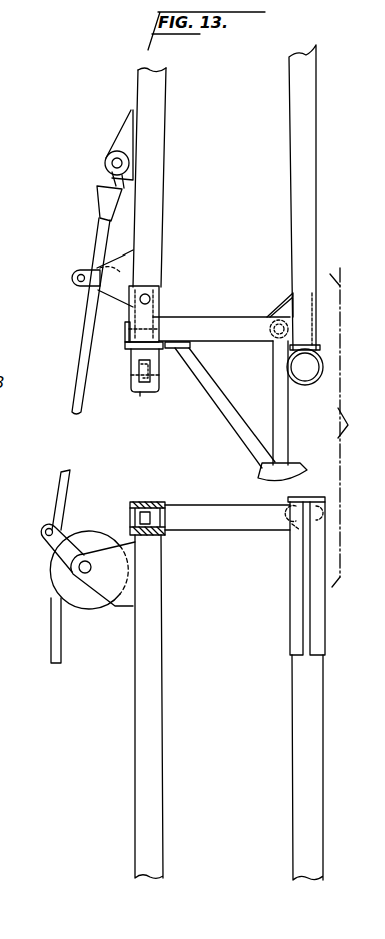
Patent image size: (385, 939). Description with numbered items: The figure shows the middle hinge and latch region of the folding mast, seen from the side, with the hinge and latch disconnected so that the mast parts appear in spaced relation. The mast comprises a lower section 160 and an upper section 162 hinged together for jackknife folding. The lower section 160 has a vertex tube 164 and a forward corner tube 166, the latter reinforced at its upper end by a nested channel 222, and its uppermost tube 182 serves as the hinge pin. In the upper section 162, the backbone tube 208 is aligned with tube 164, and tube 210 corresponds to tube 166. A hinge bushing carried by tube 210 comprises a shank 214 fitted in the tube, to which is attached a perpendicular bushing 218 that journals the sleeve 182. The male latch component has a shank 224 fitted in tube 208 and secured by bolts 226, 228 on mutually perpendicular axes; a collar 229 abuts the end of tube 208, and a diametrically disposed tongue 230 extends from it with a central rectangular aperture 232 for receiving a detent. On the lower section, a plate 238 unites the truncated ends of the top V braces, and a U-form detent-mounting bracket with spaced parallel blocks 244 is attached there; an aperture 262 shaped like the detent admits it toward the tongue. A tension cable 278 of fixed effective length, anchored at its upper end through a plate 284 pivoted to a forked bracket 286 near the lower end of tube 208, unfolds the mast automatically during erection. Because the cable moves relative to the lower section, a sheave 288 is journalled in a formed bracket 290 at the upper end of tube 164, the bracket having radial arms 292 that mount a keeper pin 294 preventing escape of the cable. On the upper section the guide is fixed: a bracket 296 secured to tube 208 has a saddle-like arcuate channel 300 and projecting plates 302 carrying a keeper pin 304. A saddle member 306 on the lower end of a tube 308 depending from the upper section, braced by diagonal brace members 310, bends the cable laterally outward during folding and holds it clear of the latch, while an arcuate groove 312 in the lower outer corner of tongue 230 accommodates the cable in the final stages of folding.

The lower section 160 is at (122, 718).
The upper section 162 is at (124, 91).
The vertex tube 164 is at (152, 690).
The corner tube 166 is at (297, 712).
The uppermost tube 182 is at (289, 537).
The backbone tube 208 is at (157, 134).
The tube 210 is at (298, 137).
The shank 214 is at (340, 268).
The bushing 218 is at (297, 383).
The channel 222 is at (297, 613).
The shank 224 is at (162, 298).
The bolt 226 is at (147, 294).
The bolt 228 is at (127, 330).
The collar 229 is at (128, 344).
The tongue 230 is at (140, 353).
The aperture 232 is at (145, 372).
The plate 238 is at (167, 511).
The blocks 244 is at (138, 503).
The aperture 262 is at (152, 519).
The tension cable 278 is at (63, 473).
The plate 284 is at (112, 178).
The forked bracket 286 is at (122, 123).
The sheave 288 is at (62, 585).
The formed bracket 290 is at (118, 596).
The radial arms 292 is at (66, 540).
The pin 294 is at (47, 527).
The bracket 296 is at (123, 255).
The arcuate channel 300 is at (115, 281).
The projecting plates 302 is at (95, 268).
The keeper pin 304 is at (77, 276).
The saddle member 306 is at (302, 478).
The tube 308 is at (213, 393).
The diagonal brace members 310 is at (285, 447).
The arcuate groove 312 is at (137, 396).